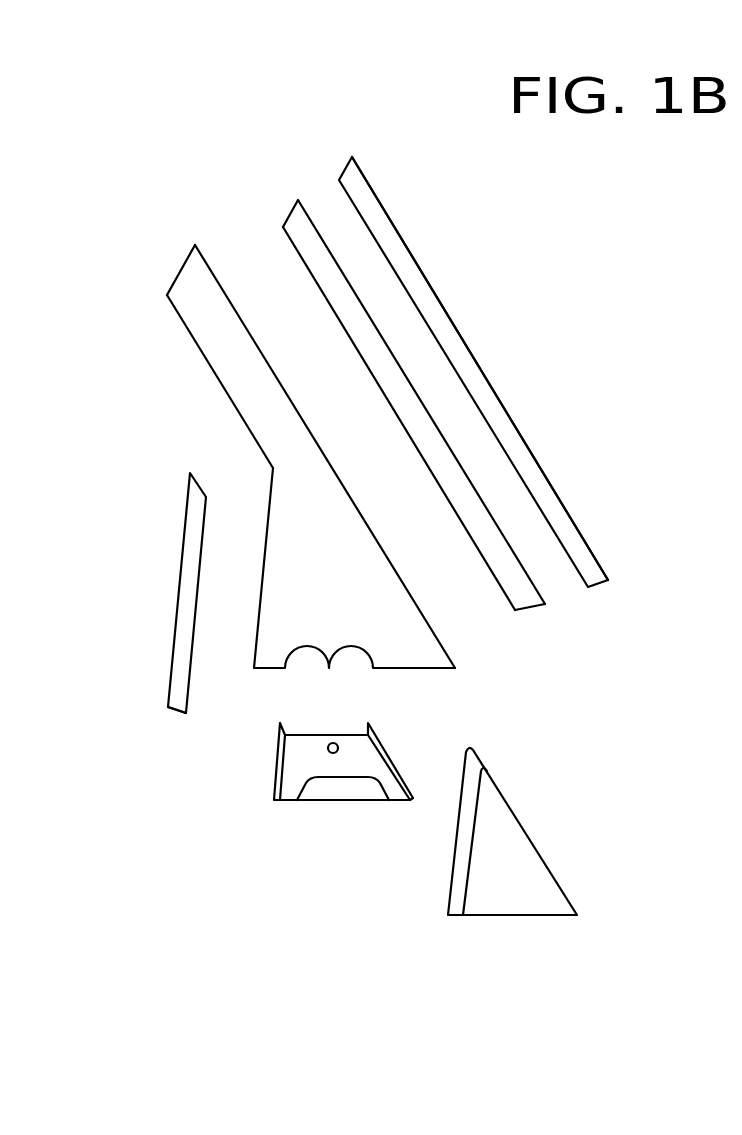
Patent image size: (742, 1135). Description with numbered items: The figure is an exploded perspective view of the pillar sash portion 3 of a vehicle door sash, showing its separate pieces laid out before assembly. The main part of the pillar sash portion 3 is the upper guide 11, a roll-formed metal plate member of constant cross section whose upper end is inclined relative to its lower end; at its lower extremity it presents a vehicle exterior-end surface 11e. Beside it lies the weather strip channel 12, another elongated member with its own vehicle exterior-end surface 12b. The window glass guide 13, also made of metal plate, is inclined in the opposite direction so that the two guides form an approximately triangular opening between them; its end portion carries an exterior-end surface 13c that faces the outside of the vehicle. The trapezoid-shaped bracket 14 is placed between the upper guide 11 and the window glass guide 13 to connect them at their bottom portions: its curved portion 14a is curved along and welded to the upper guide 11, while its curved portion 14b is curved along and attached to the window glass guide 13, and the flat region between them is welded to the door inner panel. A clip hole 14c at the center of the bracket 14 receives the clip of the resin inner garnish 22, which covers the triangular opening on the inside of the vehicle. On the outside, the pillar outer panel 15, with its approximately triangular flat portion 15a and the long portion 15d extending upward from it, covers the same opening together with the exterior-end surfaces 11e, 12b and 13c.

The pillar sash portion 3 is at (504, 242).
The upper guide 11 is at (296, 221).
The exterior-end surface 11e is at (523, 607).
The weather strip channel 12 is at (376, 200).
The exterior-end surface 12b is at (580, 530).
The window glass guide 13 is at (178, 589).
The exterior-end surface 13c is at (177, 675).
The bracket 14 is at (385, 770).
The curved portion 14a is at (372, 727).
The curved portion 14b is at (277, 750).
The clip hole 14c is at (333, 743).
The pillar outer panel 15 is at (166, 322).
The flat portion 15a is at (383, 554).
The long portion 15d is at (210, 361).
The inner garnish 22 is at (528, 838).